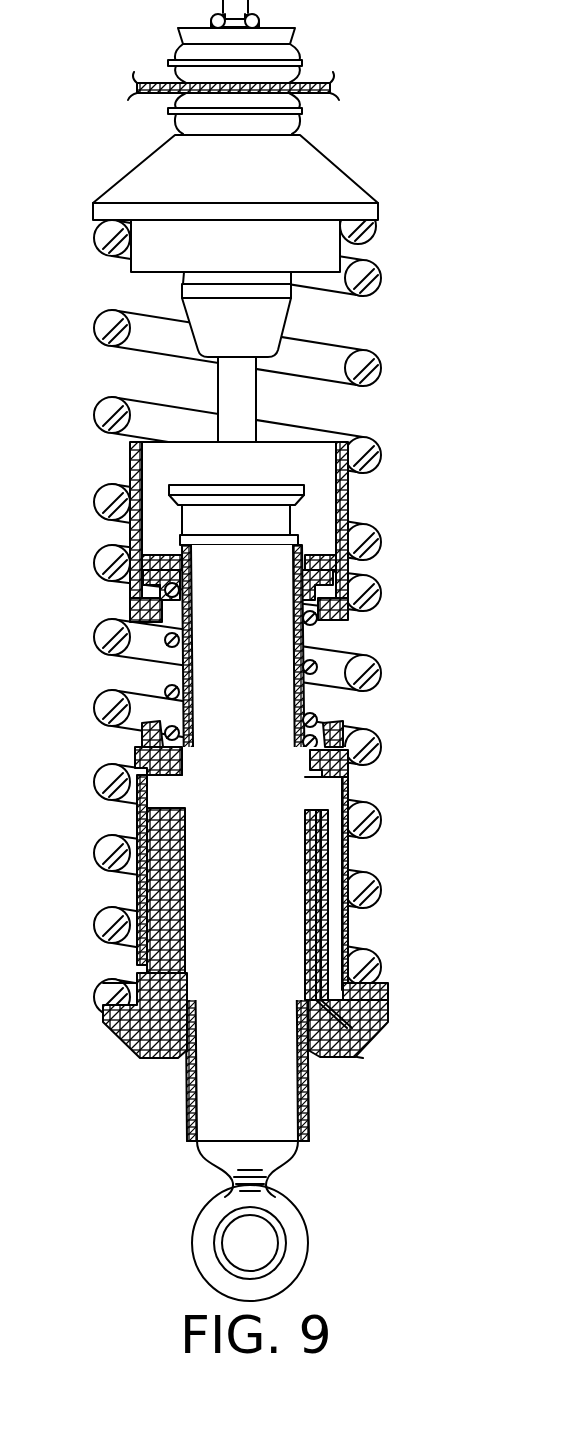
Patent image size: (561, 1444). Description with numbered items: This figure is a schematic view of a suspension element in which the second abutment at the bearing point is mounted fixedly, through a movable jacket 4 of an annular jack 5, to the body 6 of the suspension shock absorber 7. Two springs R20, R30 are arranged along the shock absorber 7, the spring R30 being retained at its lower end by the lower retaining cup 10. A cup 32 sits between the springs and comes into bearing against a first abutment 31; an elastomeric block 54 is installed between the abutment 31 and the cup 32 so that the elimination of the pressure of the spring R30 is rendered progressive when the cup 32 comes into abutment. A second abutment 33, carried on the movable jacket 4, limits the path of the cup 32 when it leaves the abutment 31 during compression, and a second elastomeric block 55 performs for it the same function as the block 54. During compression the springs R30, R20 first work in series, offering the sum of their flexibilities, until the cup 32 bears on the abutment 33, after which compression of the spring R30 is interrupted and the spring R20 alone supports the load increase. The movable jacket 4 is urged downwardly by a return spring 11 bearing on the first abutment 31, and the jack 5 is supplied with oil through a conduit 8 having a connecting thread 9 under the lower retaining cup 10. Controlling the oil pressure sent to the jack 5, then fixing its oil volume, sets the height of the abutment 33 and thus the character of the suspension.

The spring R20 is at (374, 284).
The spring R30 is at (370, 750).
The cup 32 is at (350, 526).
The abutment 31 is at (335, 566).
The elastomeric block 54 is at (140, 594).
The second elastomeric block 55 is at (343, 726).
The return spring 11 is at (166, 694).
The second abutment 33 is at (350, 777).
The movable jacket 4 is at (350, 843).
The conduit 8 is at (320, 942).
The annular jack 5 is at (350, 992).
The connecting thread 9 is at (357, 1040).
The lower retaining cup 10 is at (103, 1012).
The body 6 is at (277, 1105).
The shock absorber 7 is at (277, 1158).